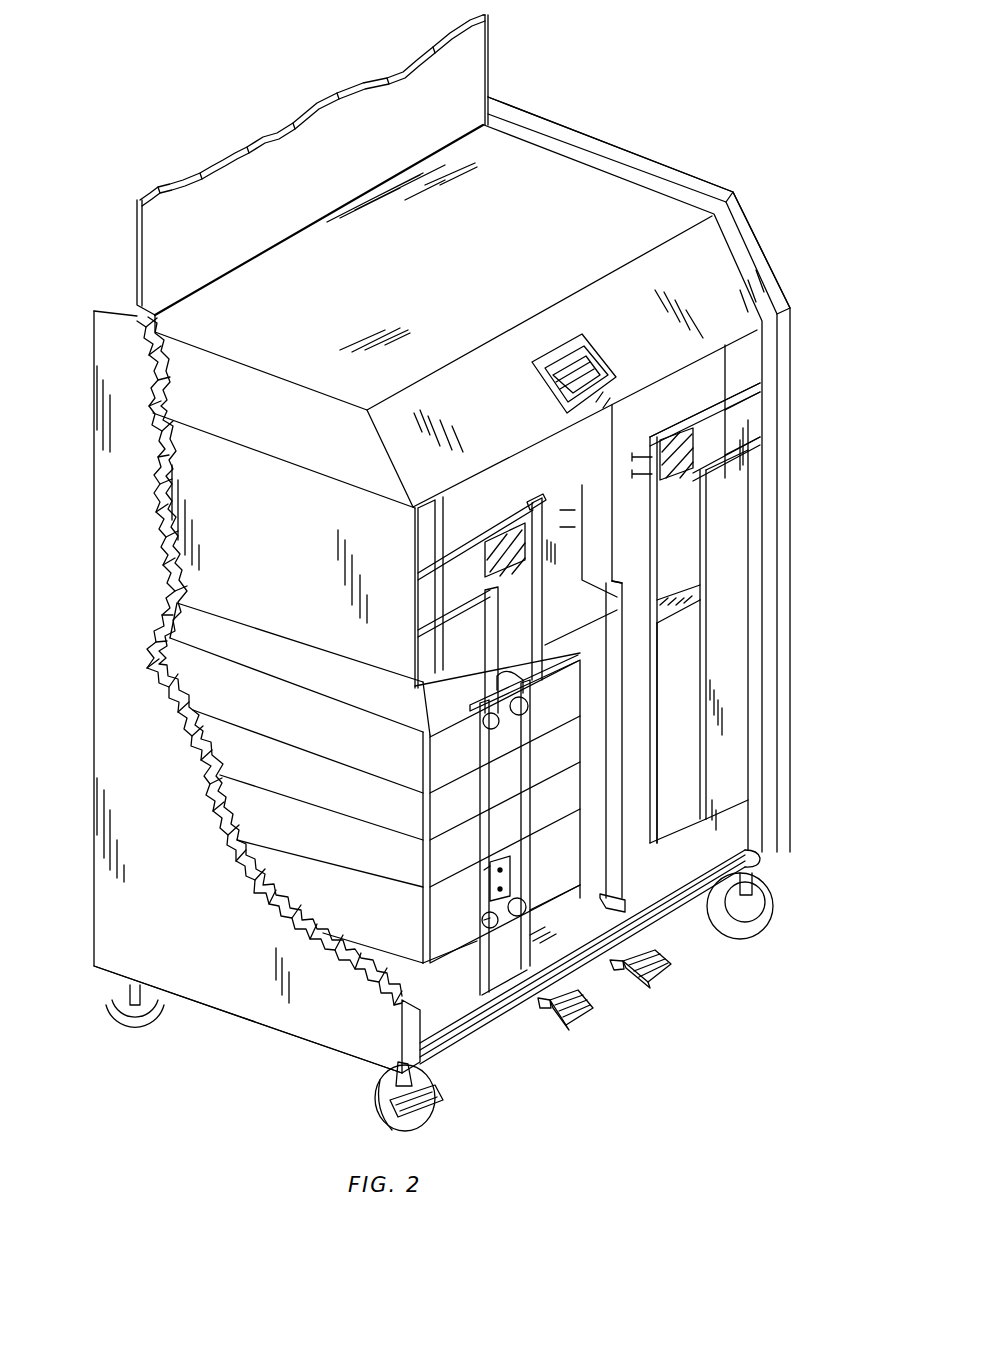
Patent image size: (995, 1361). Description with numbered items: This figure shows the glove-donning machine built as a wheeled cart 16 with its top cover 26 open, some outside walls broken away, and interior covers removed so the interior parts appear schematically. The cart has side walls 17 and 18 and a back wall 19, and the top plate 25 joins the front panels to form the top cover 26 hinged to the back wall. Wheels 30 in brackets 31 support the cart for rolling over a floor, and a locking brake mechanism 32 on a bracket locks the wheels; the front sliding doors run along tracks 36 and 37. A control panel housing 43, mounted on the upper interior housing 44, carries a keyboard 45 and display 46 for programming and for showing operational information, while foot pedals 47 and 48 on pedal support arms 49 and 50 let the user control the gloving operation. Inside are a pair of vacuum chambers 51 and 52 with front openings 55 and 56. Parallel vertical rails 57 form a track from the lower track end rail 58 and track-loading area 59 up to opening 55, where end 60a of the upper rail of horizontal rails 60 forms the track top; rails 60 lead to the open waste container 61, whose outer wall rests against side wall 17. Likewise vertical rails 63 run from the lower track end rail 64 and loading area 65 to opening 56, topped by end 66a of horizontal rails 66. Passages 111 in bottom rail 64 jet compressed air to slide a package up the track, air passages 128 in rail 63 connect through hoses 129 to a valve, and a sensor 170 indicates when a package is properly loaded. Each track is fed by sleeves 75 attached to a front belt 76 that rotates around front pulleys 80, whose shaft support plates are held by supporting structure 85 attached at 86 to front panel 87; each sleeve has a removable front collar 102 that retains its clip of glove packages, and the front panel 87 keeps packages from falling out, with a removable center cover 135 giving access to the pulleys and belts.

The wheeled cart 16 is at (601, 130).
The side wall 17 is at (661, 169).
The side wall 18 is at (215, 1000).
The back wall 19 is at (125, 305).
The top plate 25 is at (478, 42).
The top cover 26 is at (500, 66).
The wheels 30 is at (360, 1107).
The brackets 31 is at (397, 1082).
The locking brake mechanism 32 is at (442, 1093).
The track 36 is at (743, 847).
The track 37 is at (755, 868).
The control panel housing 43 is at (555, 352).
The upper interior housing 44 is at (720, 257).
The keyboard 45 is at (585, 353).
The display 46 is at (601, 381).
The foot pedal 47 is at (668, 967).
The foot pedal 48 is at (583, 1019).
The pedal support arm 49 is at (617, 968).
The pedal support arm 50 is at (543, 1007).
The vacuum chamber 51 is at (717, 367).
The vacuum chamber 52 is at (415, 515).
The front opening 55 is at (672, 442).
The front opening 56 is at (505, 532).
The vertically arranged rails 57 is at (655, 525).
The lower track end rail 58 is at (697, 610).
The track-loading area 59 is at (683, 577).
The horizontally arranged rails 60 is at (757, 395).
The upper rail end 60a is at (680, 423).
The waste container 61 is at (750, 417).
The vertically arranged rails 63 is at (533, 593).
The lower track end rail 64 is at (470, 705).
The track-loading area 65 is at (527, 647).
The horizontally arranged rails 66 is at (463, 548).
The upper rail end 66a is at (528, 505).
The sleeves 75 is at (292, 720).
The front belt 76 is at (477, 811).
The front belt receiving pulleys 80 is at (481, 748).
The supporting structure 85 is at (484, 881).
The attachment point 86 is at (484, 916).
The front panel 87 is at (732, 748).
The front collar 102 is at (432, 874).
The passages 111 is at (497, 683).
The air passages 128 is at (547, 507).
The hoses 129 is at (640, 474).
The removable center covers 135 is at (699, 703).
The sensor 170 is at (690, 563).